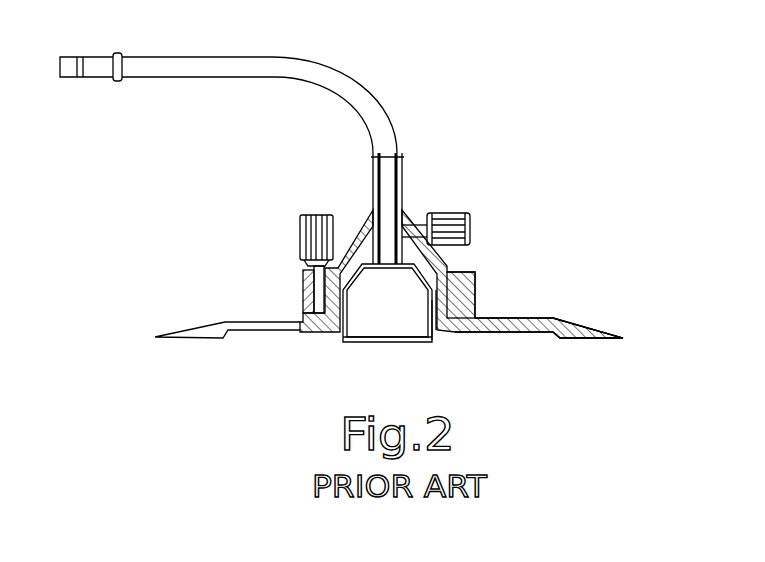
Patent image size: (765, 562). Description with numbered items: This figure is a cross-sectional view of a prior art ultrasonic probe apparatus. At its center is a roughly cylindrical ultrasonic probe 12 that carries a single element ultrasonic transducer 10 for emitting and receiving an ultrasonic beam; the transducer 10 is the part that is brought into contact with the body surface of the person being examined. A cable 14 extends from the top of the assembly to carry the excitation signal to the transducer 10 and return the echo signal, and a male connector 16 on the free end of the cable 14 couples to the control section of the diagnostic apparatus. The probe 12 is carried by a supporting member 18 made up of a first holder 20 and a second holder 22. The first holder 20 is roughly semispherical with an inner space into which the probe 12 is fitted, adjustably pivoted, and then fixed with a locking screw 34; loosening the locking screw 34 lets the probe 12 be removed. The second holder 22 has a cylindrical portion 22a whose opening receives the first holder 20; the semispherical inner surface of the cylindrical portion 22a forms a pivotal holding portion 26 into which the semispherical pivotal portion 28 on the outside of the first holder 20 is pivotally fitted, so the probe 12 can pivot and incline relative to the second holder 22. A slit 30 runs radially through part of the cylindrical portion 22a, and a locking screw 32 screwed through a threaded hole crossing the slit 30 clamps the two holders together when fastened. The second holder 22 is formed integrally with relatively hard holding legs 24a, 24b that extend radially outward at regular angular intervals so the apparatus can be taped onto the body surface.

The ultrasonic transducer 10 is at (416, 340).
The ultrasonic probe 12 is at (362, 327).
The cable 14 is at (355, 108).
The male connector 16 is at (95, 67).
The supporting member 18 is at (489, 239).
The first holder 20 is at (457, 258).
The second holder 22 is at (477, 308).
The cylindrical portion 22a is at (340, 262).
The holding leg 24a is at (585, 340).
The holding leg 24b is at (200, 341).
The pivotal holding portion 26 is at (424, 316).
The pivotal portion 28 is at (475, 283).
The slit 30 is at (305, 300).
The locking screw 32 is at (300, 235).
The locking screw 34 is at (445, 213).